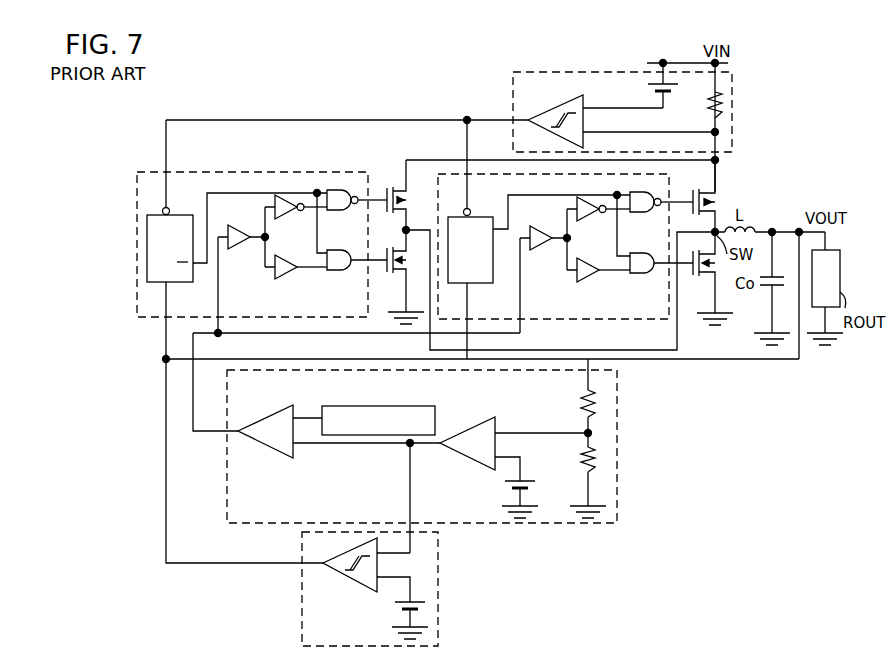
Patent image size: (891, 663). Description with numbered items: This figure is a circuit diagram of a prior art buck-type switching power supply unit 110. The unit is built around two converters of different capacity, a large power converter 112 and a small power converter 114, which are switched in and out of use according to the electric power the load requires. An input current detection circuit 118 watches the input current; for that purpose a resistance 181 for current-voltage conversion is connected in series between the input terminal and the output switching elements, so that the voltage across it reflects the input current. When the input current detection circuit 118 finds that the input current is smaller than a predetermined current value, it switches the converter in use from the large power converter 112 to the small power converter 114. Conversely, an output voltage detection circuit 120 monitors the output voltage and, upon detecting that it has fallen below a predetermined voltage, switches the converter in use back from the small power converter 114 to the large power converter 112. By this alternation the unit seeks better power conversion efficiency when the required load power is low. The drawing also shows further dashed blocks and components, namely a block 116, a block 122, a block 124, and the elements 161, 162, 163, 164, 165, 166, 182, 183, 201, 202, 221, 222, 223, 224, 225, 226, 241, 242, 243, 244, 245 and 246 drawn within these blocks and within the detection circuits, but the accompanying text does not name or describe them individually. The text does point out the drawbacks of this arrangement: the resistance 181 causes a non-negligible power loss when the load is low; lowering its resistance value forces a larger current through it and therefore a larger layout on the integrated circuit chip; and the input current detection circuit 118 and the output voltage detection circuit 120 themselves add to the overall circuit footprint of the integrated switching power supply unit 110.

The switching power supply unit 110 is at (416, 105).
The large power converter 112 is at (374, 165).
The small power converter 114 is at (736, 182).
The control circuit 116 is at (426, 468).
The input current detection circuit 118 is at (652, 107).
The output voltage detection circuit 120 is at (395, 544).
The first drive logic circuit 122 is at (262, 226).
The second drive logic circuit 124 is at (565, 260).
The resistor 161 is at (574, 414).
The resistor 162 is at (574, 469).
The reference voltage source 163 is at (505, 487).
The comparator 164 is at (466, 430).
The oscillator 165 is at (422, 405).
The buffer 166 is at (266, 415).
The resistance 181 is at (708, 114).
The reference voltage source 182 is at (652, 90).
The hysteresis comparator 183 is at (556, 108).
The reference voltage source 201 is at (394, 607).
The hysteresis comparator 202 is at (340, 576).
The SR latch 221 is at (172, 214).
The buffer 222 is at (244, 241).
The inverter 223 is at (290, 211).
The buffer 224 is at (290, 272).
The NAND gate 225 is at (349, 211).
The AND gate 226 is at (349, 272).
The SR latch 241 is at (473, 214).
The buffer 242 is at (546, 242).
The inverter 243 is at (590, 213).
The buffer 244 is at (590, 275).
The NAND gate 245 is at (652, 213).
The AND gate 246 is at (652, 274).